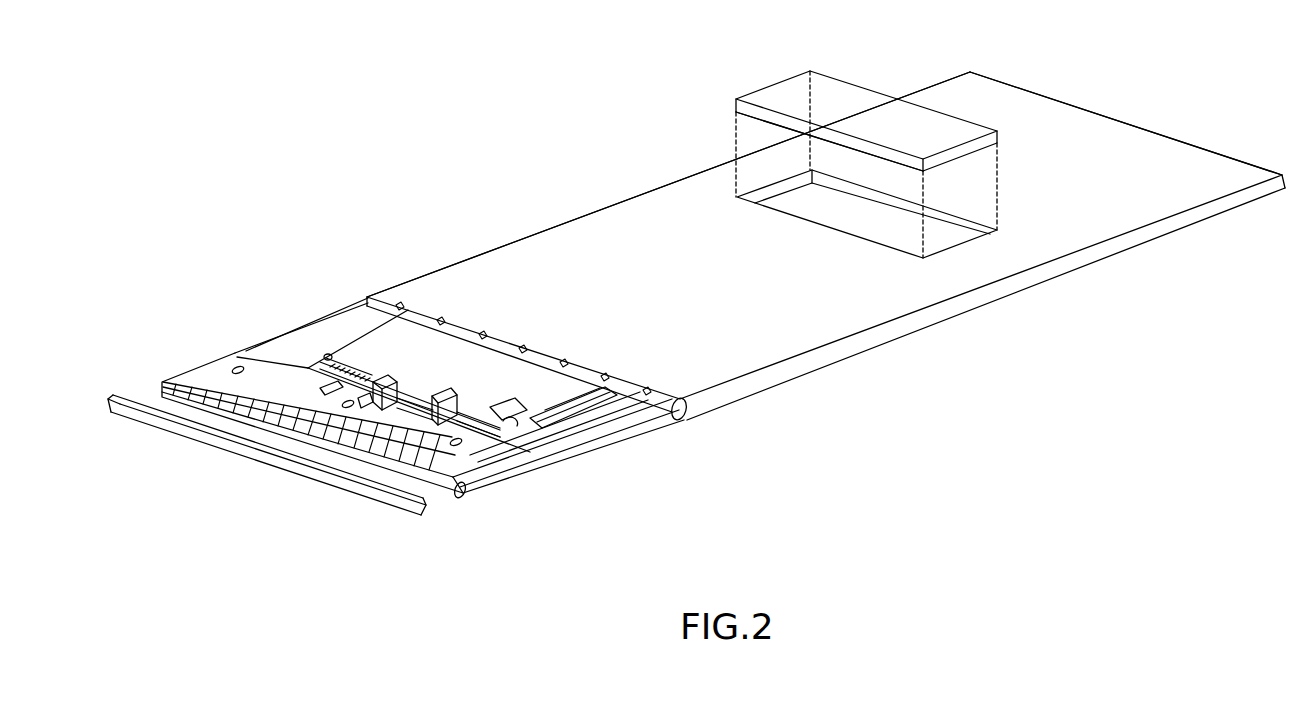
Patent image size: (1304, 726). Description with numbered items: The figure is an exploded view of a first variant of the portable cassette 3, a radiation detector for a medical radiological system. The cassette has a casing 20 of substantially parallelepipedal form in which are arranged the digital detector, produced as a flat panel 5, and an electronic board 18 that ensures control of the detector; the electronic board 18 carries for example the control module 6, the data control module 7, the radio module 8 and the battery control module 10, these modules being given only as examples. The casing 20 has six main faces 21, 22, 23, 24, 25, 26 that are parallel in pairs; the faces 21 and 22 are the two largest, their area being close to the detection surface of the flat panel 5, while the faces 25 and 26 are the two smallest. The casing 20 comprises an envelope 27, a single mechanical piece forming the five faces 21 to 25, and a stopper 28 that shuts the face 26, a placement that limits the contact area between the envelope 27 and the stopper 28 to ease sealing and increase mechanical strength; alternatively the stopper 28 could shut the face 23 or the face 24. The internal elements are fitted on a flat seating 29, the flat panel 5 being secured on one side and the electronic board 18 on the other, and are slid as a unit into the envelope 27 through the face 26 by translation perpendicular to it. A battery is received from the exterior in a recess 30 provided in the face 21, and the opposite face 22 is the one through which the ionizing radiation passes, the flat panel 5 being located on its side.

The portable cassette 3 is at (678, 308).
The flat panel 5 is at (423, 409).
The control module 6 is at (437, 352).
The data control module 7 is at (463, 362).
The radio module 8 is at (490, 372).
The battery control module 10 is at (897, 134).
The electronic board 18 is at (392, 369).
The casing 20 is at (826, 260).
The face 21 is at (824, 223).
The face 22 is at (1022, 297).
The face 23 is at (587, 212).
The face 24 is at (977, 298).
The face 25 is at (1137, 127).
The face 26 is at (249, 481).
The envelope 27 is at (440, 237).
The stopper 28 is at (115, 413).
The flat seating 29 is at (583, 432).
The recess 30 is at (835, 221).